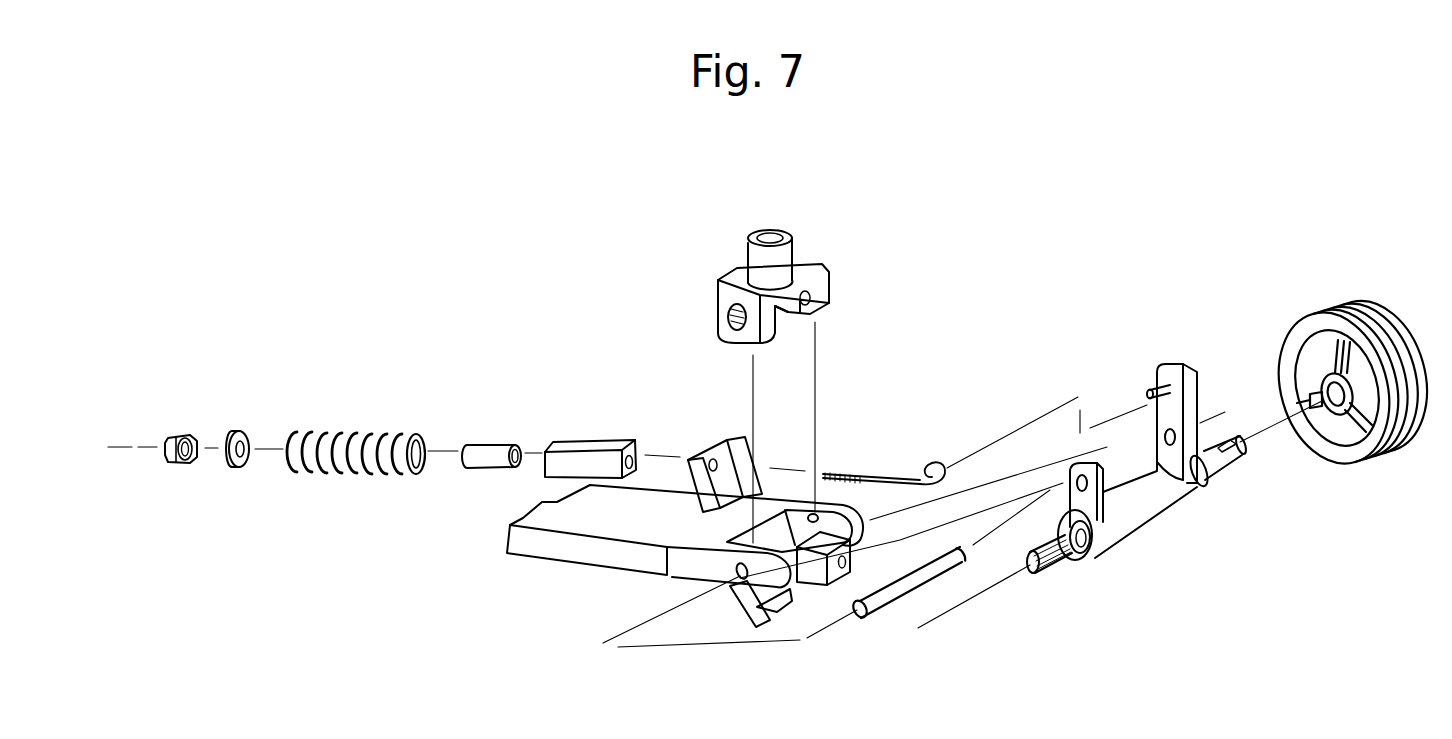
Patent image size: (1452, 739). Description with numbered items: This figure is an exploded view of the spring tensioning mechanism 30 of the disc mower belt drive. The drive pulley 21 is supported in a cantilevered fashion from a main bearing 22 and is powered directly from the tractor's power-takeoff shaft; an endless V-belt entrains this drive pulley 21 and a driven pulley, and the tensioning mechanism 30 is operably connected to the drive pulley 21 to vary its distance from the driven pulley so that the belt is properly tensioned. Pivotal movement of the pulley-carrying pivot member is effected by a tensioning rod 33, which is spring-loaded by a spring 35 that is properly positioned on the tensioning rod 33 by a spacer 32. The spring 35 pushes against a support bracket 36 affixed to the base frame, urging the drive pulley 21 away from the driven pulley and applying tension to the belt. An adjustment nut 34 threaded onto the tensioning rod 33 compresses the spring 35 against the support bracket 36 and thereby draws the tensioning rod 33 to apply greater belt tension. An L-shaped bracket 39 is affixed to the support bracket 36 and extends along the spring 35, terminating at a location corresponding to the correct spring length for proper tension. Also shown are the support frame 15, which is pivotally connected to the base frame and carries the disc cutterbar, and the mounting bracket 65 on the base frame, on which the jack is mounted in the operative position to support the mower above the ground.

The support frame 15 is at (622, 543).
The drive pulley 21 is at (1293, 343).
The main bearing 22 is at (1150, 508).
The spring tensioning mechanism 30 is at (416, 348).
The spacer 32 is at (495, 445).
The tensioning rod 33 is at (910, 477).
The adjustment nut 34 is at (190, 432).
The spring 35 is at (347, 430).
The support bracket 36 is at (713, 444).
The L-shaped bracket 39 is at (587, 452).
The mounting bracket 65 is at (842, 580).